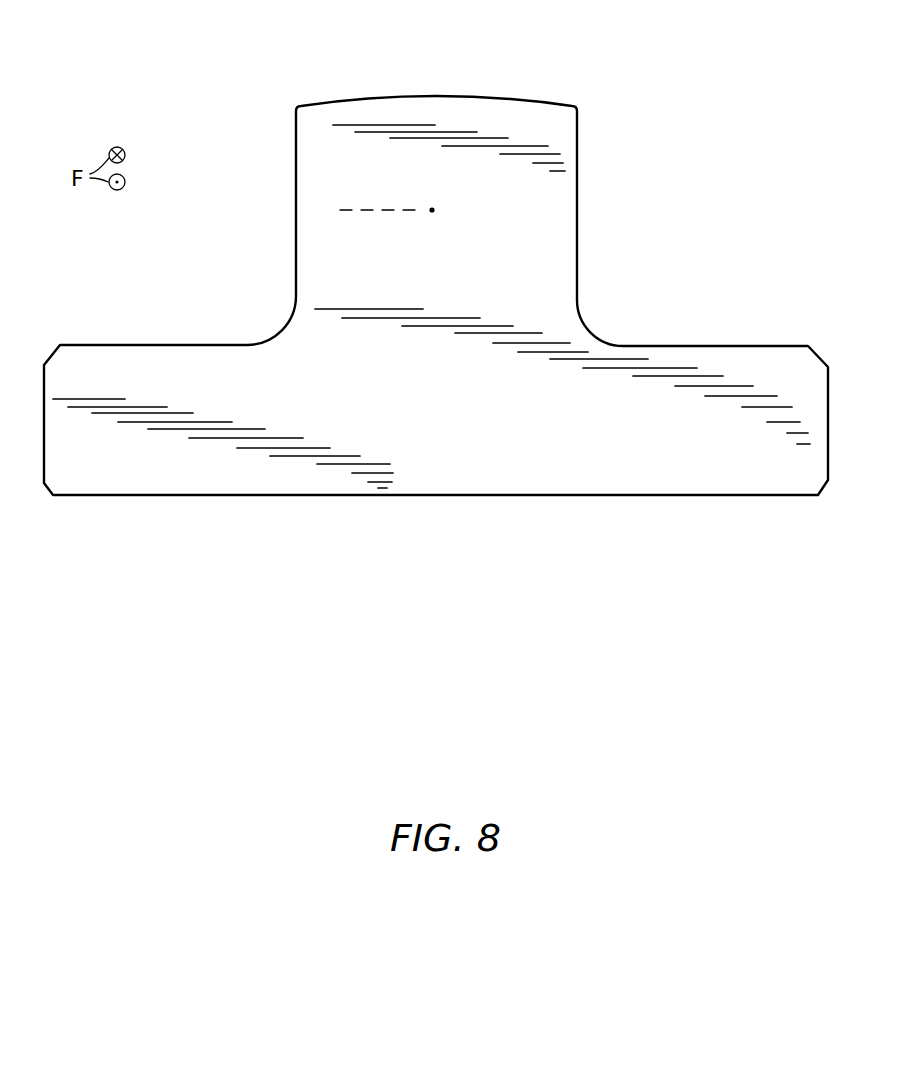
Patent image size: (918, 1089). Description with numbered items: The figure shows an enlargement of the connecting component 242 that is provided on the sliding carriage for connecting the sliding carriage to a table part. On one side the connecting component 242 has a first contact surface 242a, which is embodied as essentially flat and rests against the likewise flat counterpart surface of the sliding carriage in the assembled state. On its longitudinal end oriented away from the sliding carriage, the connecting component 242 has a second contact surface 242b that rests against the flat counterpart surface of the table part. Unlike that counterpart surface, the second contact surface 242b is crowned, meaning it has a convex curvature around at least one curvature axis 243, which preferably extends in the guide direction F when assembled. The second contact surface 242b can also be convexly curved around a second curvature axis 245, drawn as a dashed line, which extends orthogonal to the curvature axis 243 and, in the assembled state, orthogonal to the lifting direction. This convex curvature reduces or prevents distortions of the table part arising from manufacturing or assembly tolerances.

The connecting component 242 is at (560, 262).
The first contact surface 242a is at (359, 496).
The second contact surface 242b is at (382, 97).
The curvature axis 243 is at (434, 210).
The second curvature axis 245 is at (362, 211).